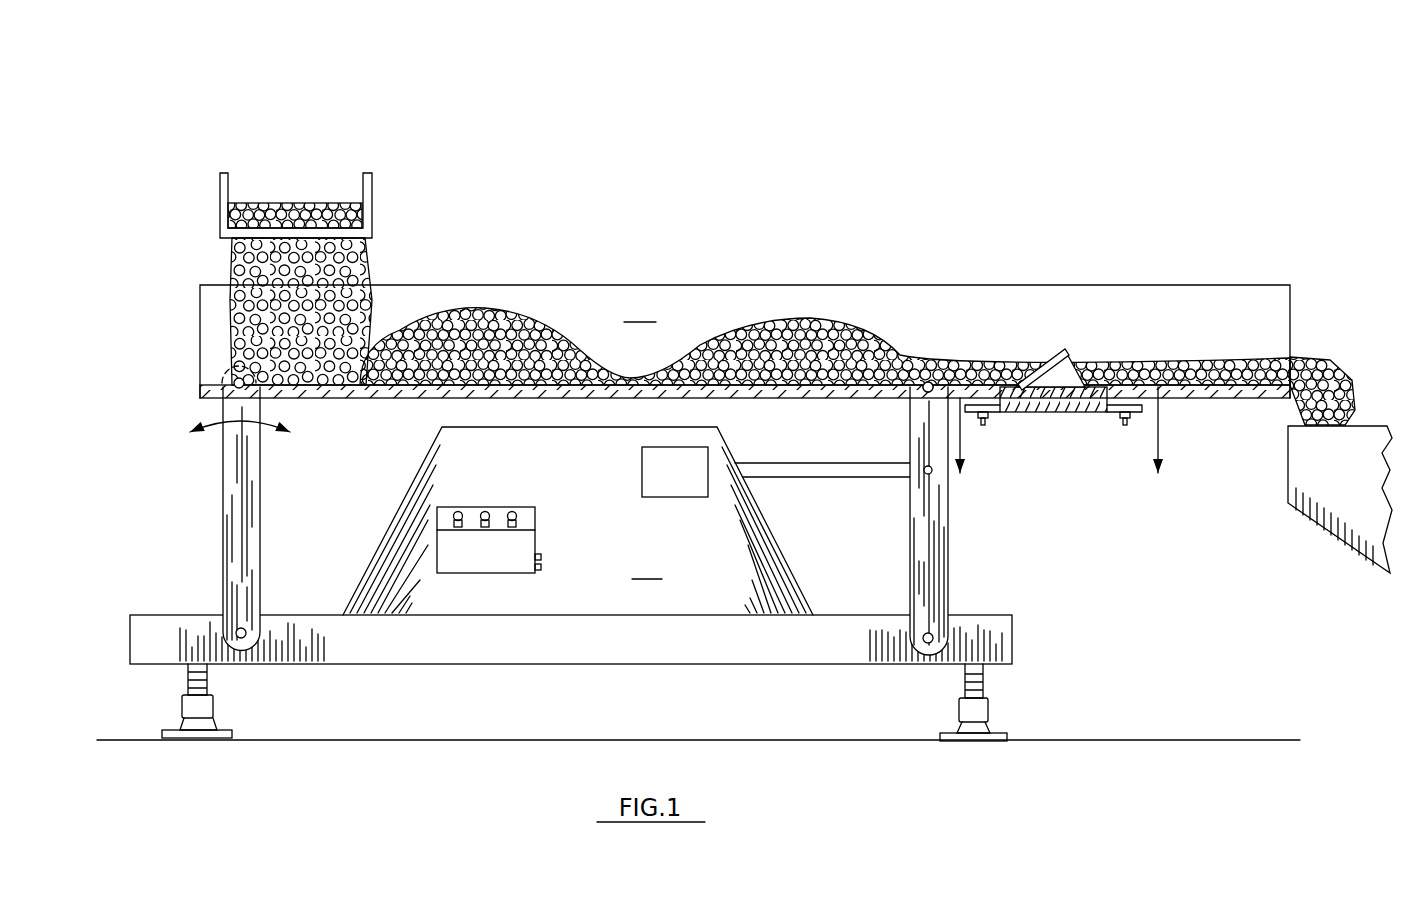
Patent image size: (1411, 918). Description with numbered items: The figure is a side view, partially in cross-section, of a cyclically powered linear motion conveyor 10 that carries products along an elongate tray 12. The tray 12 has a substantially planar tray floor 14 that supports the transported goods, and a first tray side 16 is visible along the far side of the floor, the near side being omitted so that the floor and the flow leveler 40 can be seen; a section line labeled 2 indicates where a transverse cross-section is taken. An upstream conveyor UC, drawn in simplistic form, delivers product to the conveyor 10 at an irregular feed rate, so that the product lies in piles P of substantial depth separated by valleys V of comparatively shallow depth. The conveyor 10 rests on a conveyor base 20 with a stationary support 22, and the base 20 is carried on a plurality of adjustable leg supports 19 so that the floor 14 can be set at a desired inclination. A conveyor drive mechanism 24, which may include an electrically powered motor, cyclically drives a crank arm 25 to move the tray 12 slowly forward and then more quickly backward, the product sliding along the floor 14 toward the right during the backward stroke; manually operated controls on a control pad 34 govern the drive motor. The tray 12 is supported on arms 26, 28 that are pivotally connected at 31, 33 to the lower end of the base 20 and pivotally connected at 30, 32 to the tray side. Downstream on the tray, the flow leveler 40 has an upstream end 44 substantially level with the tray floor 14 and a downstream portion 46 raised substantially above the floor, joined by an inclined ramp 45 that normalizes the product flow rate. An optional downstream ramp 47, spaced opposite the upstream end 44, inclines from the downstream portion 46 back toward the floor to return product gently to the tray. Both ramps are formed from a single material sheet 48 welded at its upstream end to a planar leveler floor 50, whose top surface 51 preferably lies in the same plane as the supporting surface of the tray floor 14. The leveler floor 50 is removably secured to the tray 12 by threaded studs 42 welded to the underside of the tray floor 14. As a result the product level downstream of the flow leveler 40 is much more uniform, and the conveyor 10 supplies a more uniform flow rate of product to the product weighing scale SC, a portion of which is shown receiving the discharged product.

The linear motion conveyor 10 is at (585, 205).
The elongate tray 12 is at (745, 341).
The tray floor 14 is at (412, 398).
The first tray side 16 is at (940, 312).
The adjustable leg supports 19 is at (975, 716).
The conveyor base 20 is at (995, 637).
The stationary support 22 is at (578, 521).
The conveyor drive mechanism 24 is at (670, 480).
The crank arm 25 is at (792, 475).
The tray support arm 26 is at (932, 557).
The tray support arm 28 is at (233, 533).
The upper pivotal connection 30 is at (926, 382).
The lower pivotal connection 31 is at (925, 641).
The upper pivotal connection 32 is at (236, 381).
The lower pivotal connection 33 is at (235, 631).
The control pad 34 is at (455, 517).
The flow leveler 40 is at (1056, 343).
The threaded studs 42 is at (1128, 430).
The upstream end 44 is at (1003, 410).
The inclined ramp 45 is at (1027, 363).
The downstream portion 46 is at (1053, 350).
The downstream ramp 47 is at (1080, 353).
The material sheet 48 is at (1062, 395).
The planar leveler floor 50 is at (1000, 412).
The top surface of leveler floor 51 is at (931, 381).
The section line 2- 2 is at (1060, 449).
The upstream conveyor UC is at (317, 197).
The piles P is at (488, 303).
The valleys V is at (595, 350).
The product weighing scale SC is at (1365, 540).